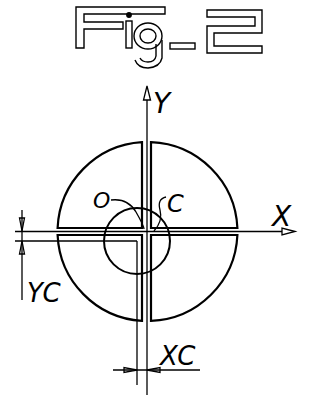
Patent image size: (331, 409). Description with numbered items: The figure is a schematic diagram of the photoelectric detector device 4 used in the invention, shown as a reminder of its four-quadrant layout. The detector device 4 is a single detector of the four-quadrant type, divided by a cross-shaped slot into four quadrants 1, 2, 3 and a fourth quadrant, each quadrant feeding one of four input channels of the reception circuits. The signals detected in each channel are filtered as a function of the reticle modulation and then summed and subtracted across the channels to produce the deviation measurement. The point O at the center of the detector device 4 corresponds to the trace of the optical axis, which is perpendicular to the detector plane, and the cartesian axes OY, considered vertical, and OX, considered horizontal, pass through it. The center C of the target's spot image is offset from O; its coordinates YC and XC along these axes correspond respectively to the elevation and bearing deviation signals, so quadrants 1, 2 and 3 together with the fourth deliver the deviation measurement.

The detector device 4 is at (148, 231).
The first quadrant 1 is at (100, 185).
The second quadrant 2 is at (194, 185).
The third quadrant 3 is at (194, 278).